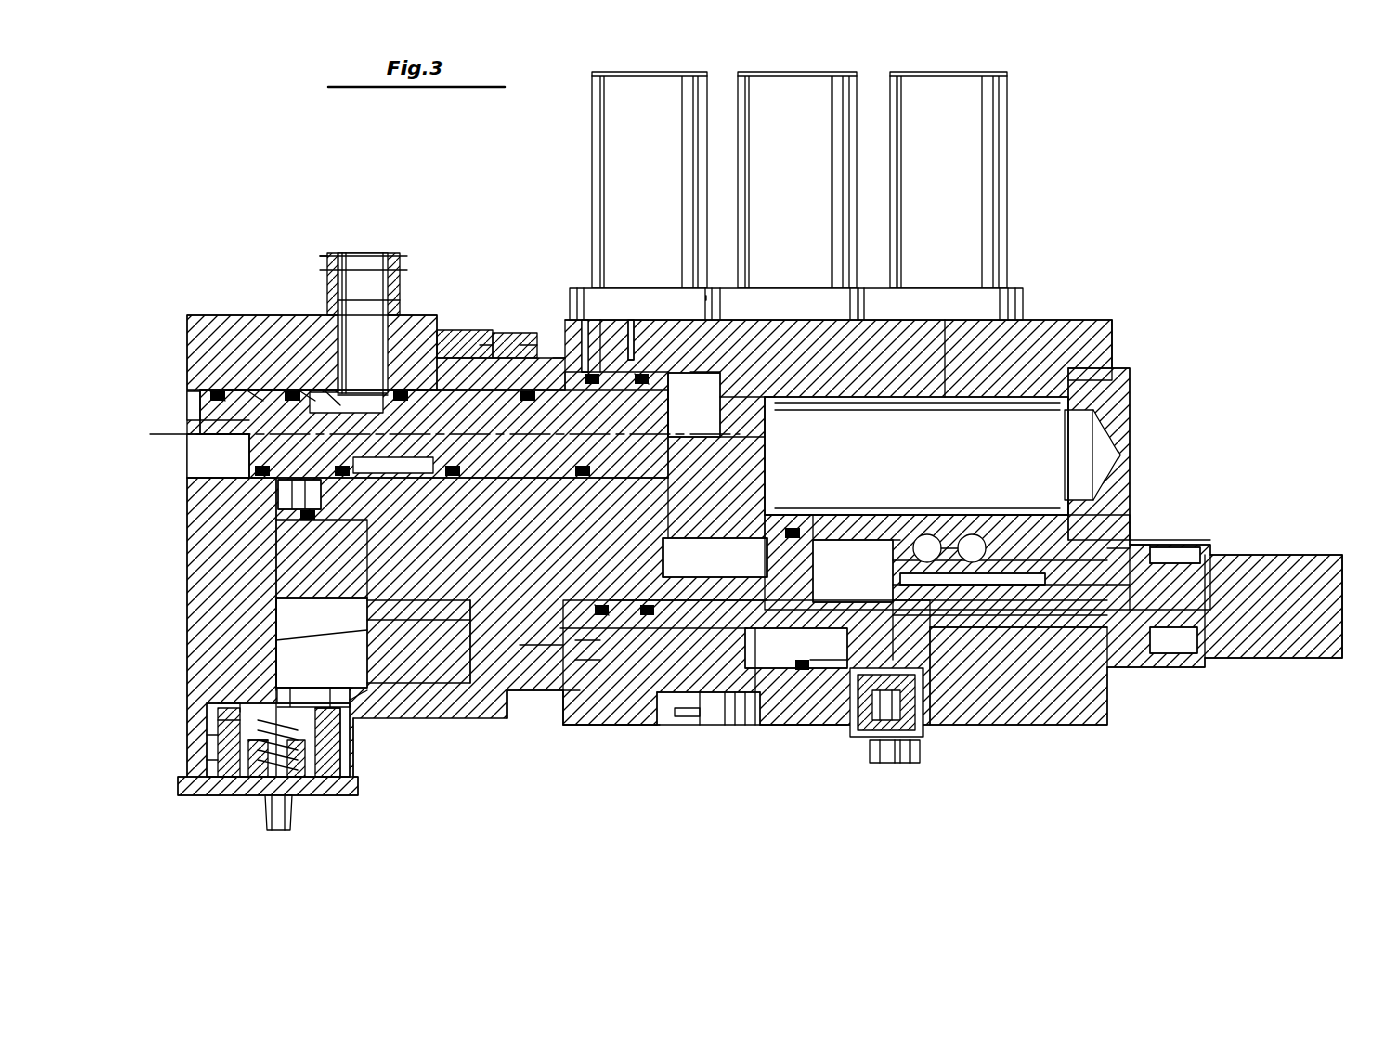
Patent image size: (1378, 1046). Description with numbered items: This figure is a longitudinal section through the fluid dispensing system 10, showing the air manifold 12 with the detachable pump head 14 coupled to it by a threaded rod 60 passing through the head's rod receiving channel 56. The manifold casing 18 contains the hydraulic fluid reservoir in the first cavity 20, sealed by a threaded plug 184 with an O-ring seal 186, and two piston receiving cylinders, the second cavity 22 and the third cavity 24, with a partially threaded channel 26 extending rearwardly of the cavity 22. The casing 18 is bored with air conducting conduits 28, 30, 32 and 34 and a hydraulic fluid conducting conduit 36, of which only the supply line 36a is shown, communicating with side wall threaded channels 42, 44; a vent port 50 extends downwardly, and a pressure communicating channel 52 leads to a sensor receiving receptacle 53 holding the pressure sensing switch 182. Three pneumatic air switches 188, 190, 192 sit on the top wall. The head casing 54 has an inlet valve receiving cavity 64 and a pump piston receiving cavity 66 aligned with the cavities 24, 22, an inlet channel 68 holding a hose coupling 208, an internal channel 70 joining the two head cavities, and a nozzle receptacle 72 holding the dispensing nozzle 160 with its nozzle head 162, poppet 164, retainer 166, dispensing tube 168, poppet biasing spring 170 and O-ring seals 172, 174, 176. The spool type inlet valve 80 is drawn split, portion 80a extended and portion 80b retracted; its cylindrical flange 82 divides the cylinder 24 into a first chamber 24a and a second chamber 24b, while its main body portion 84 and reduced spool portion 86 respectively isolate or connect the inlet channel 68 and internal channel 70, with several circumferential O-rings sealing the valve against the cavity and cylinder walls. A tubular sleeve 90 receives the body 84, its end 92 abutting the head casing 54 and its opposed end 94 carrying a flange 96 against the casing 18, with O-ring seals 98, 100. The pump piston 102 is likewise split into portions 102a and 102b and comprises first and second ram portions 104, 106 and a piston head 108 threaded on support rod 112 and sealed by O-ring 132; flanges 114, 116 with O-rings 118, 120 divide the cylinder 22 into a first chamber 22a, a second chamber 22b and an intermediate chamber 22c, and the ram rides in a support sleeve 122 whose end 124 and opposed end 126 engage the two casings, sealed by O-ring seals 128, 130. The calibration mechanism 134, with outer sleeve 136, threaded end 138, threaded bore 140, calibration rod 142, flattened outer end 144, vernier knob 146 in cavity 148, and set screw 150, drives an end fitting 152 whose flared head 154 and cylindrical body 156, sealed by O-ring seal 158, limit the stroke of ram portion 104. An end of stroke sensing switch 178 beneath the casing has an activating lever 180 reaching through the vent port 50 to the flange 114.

The fluid dispensing system 10 is at (1115, 215).
The air manifold 12 is at (1118, 328).
The pump head 14 is at (205, 300).
The casing 18 is at (825, 730).
The first cavity 20 is at (858, 473).
The second cavity 22 is at (640, 680).
The first chamber 22a is at (600, 725).
The second chamber 22b is at (870, 538).
The intermediate chamber 22c is at (808, 656).
The third cavity 24 is at (740, 410).
The first chamber 24a is at (770, 520).
The second chamber 24b is at (725, 400).
The partially threaded channel 26 is at (1040, 640).
The air conducting conduit 28 is at (672, 548).
The air conducting conduit 30 is at (640, 345).
The air conducting conduit 32 is at (770, 395).
The air conducting conduit 34 is at (955, 345).
The hydraulic fluid conducting conduit 36 is at (1000, 560).
The supply line 36a is at (950, 545).
The threaded channel 42 is at (927, 534).
The threaded channel 44 is at (975, 534).
The vent port 50 is at (770, 690).
The pressure communicating channel 52 is at (860, 740).
The sensor receiving receptacle 53 is at (885, 765).
The head casing 54 is at (185, 663).
The rod receiving channel 56 is at (465, 340).
The threaded rod 60 is at (530, 345).
The inlet valve receiving cavity 64 is at (300, 400).
The pump piston receiving cavity 66 is at (350, 700).
The inlet channel 68 is at (328, 400).
The internal channel 70 is at (282, 490).
The nozzle receptacle 72 is at (220, 722).
The inlet valve 80 is at (186, 405).
The split portion 80a is at (205, 422).
The split portion 80b is at (245, 455).
The cylindrical flange 82 is at (700, 395).
The main body portion 84 is at (390, 320).
The spool portion 86 is at (258, 392).
The tubular sleeve 90 is at (520, 358).
The sleeve end 92 is at (490, 345).
The opposed sleeve end 94 is at (585, 325).
The circumferentially extending flange 96 is at (555, 328).
The O-ring seal 98 is at (672, 422).
The O-ring seal 100 is at (615, 330).
The pump piston 102 is at (300, 598).
The split portion 102a is at (268, 552).
The split portion 102b is at (300, 628).
The first ram portion 104 is at (905, 665).
The second ram portion 106 is at (690, 700).
The piston head 108 is at (480, 690).
The support rod 112 is at (540, 645).
The flange 114 is at (820, 690).
The flange 116 is at (680, 700).
The O-ring 118 is at (795, 528).
The O-ring 120 is at (700, 700).
The support sleeve 122 is at (572, 700).
The sleeve end 124 is at (460, 605).
The opposed sleeve end 126 is at (578, 680).
The O-ring seal 128 is at (590, 655).
The O-ring seal 130 is at (570, 700).
The O-ring 132 is at (415, 665).
The calibration mechanism 134 is at (1200, 670).
The outer sleeve 136 is at (1160, 560).
The threaded end 138 is at (1110, 548).
The threaded bore 140 is at (1195, 600).
The calibration rod 142 is at (1173, 655).
The flattened outer end 144 is at (1240, 610).
The vernier knob 146 is at (1275, 660).
The cavity 148 is at (1182, 575).
The set screw 150 is at (1150, 555).
The end fitting 152 is at (888, 585).
The flared head 154 is at (950, 640).
The cylindrical body 156 is at (960, 625).
The O-ring seal 158 is at (975, 610).
The dispensing nozzle 160 is at (205, 795).
The nozzle head 162 is at (250, 795).
The poppet 164 is at (330, 780).
The retainer 166 is at (232, 712).
The dispensing tube 168 is at (285, 815).
The poppet biasing spring 170 is at (252, 780).
The O-ring seal 172 is at (210, 740).
The O-ring seal 174 is at (208, 770).
The O-ring seal 176 is at (335, 700).
The end of stroke sensing switch 178 is at (740, 712).
The activating lever 180 is at (780, 680).
The pressure sensing switch 182 is at (905, 765).
The threaded plug 184 is at (1125, 440).
The O-ring seal 186 is at (1108, 380).
The air switch 188 is at (628, 193).
The air switch 190 is at (776, 193).
The air switch 192 is at (926, 193).
The hose coupling 208 is at (340, 262).